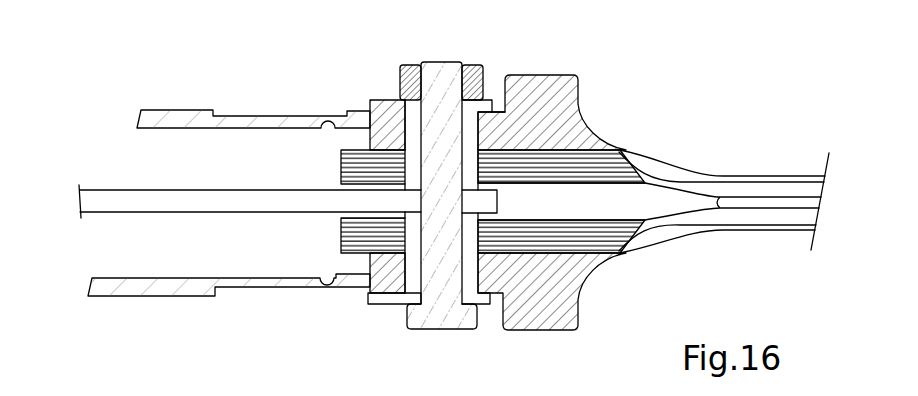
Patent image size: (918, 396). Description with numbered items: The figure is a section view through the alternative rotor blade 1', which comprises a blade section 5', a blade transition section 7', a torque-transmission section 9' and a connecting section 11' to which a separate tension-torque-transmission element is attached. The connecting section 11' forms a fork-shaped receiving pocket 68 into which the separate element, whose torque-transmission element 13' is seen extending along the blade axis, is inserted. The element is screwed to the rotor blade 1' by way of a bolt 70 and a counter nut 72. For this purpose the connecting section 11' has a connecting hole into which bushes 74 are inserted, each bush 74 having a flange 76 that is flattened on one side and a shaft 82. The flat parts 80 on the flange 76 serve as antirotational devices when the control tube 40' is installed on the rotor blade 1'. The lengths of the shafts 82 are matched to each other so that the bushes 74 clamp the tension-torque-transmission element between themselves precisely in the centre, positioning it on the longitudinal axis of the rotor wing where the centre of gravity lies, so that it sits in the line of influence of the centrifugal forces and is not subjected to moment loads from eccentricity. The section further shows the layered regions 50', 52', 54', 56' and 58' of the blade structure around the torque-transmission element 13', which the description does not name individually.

The rotor blade 1' is at (653, 139).
The blade section 5' is at (649, 170).
The blade transition section 7' is at (717, 266).
The torque-transmission section 9' is at (552, 291).
The connecting section 11' is at (561, 295).
The torque-transmission element 13' is at (288, 177).
The control tube 40' is at (253, 72).
The upper clamping body 50' is at (565, 103).
The lower plate 52' is at (229, 260).
The skin 54' is at (696, 104).
The upper fiber layers 56' is at (561, 108).
The plate step 58' is at (253, 95).
The receiving pocket 68 is at (338, 183).
The bolt 70 is at (443, 69).
The counter nut 72 is at (411, 64).
The bush 74 is at (395, 131).
The flange 76 is at (385, 100).
The flat parts 80 is at (513, 110).
The shaft 82 is at (410, 268).